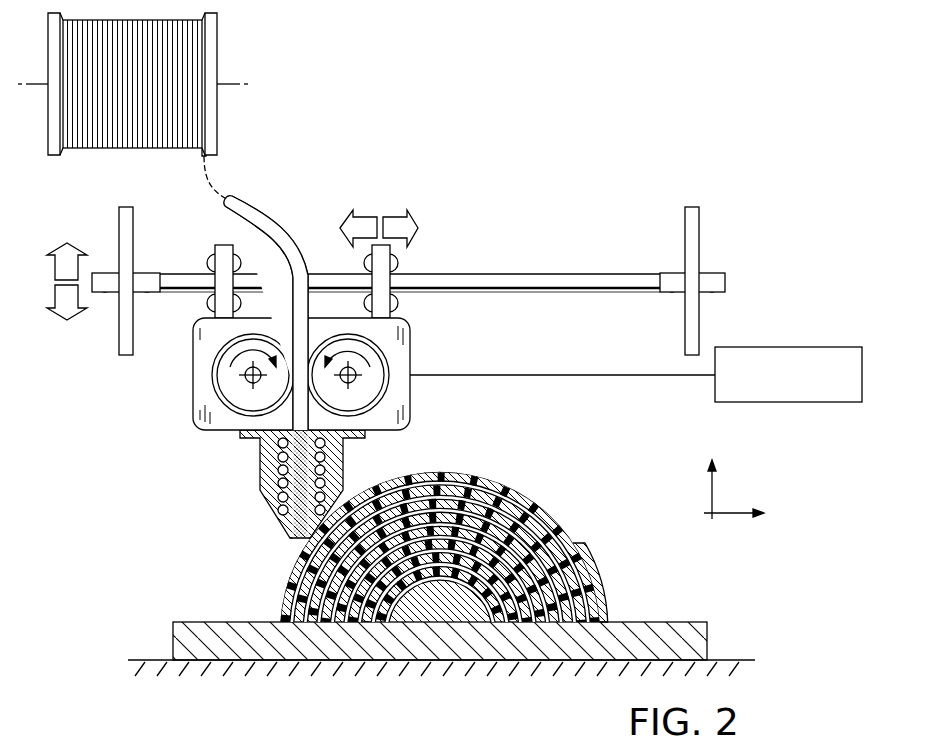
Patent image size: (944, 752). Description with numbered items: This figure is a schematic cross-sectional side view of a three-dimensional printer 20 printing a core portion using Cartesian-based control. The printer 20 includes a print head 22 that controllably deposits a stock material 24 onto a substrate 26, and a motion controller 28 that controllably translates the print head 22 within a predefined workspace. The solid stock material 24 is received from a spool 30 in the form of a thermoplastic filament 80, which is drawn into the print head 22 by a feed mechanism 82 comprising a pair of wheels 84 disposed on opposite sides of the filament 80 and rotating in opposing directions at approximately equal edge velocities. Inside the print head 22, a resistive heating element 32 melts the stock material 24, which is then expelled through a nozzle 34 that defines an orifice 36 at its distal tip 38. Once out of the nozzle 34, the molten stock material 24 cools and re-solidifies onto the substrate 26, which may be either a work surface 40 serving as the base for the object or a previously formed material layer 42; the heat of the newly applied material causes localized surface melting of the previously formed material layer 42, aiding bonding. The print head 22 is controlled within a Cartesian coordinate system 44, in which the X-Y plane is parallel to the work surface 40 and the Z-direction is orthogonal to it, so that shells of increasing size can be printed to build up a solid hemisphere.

The 3D printer 20 is at (475, 161).
The print head 22 is at (413, 396).
The stock material 24 is at (309, 260).
The substrate 26 is at (505, 478).
The motion controller 28 is at (787, 347).
The spool 30 is at (218, 55).
The resistive heating element 32 is at (278, 460).
The nozzle 34 is at (262, 470).
The orifice 36 is at (298, 480).
The distal tip 38 is at (285, 542).
The work surface 40 is at (203, 623).
The previously formed material layer 42 is at (560, 527).
The Cartesian coordinate system 44 is at (730, 513).
The thermoplastic filament 80 is at (240, 198).
The feed mechanism 82 is at (211, 335).
The wheels 84 is at (212, 373).